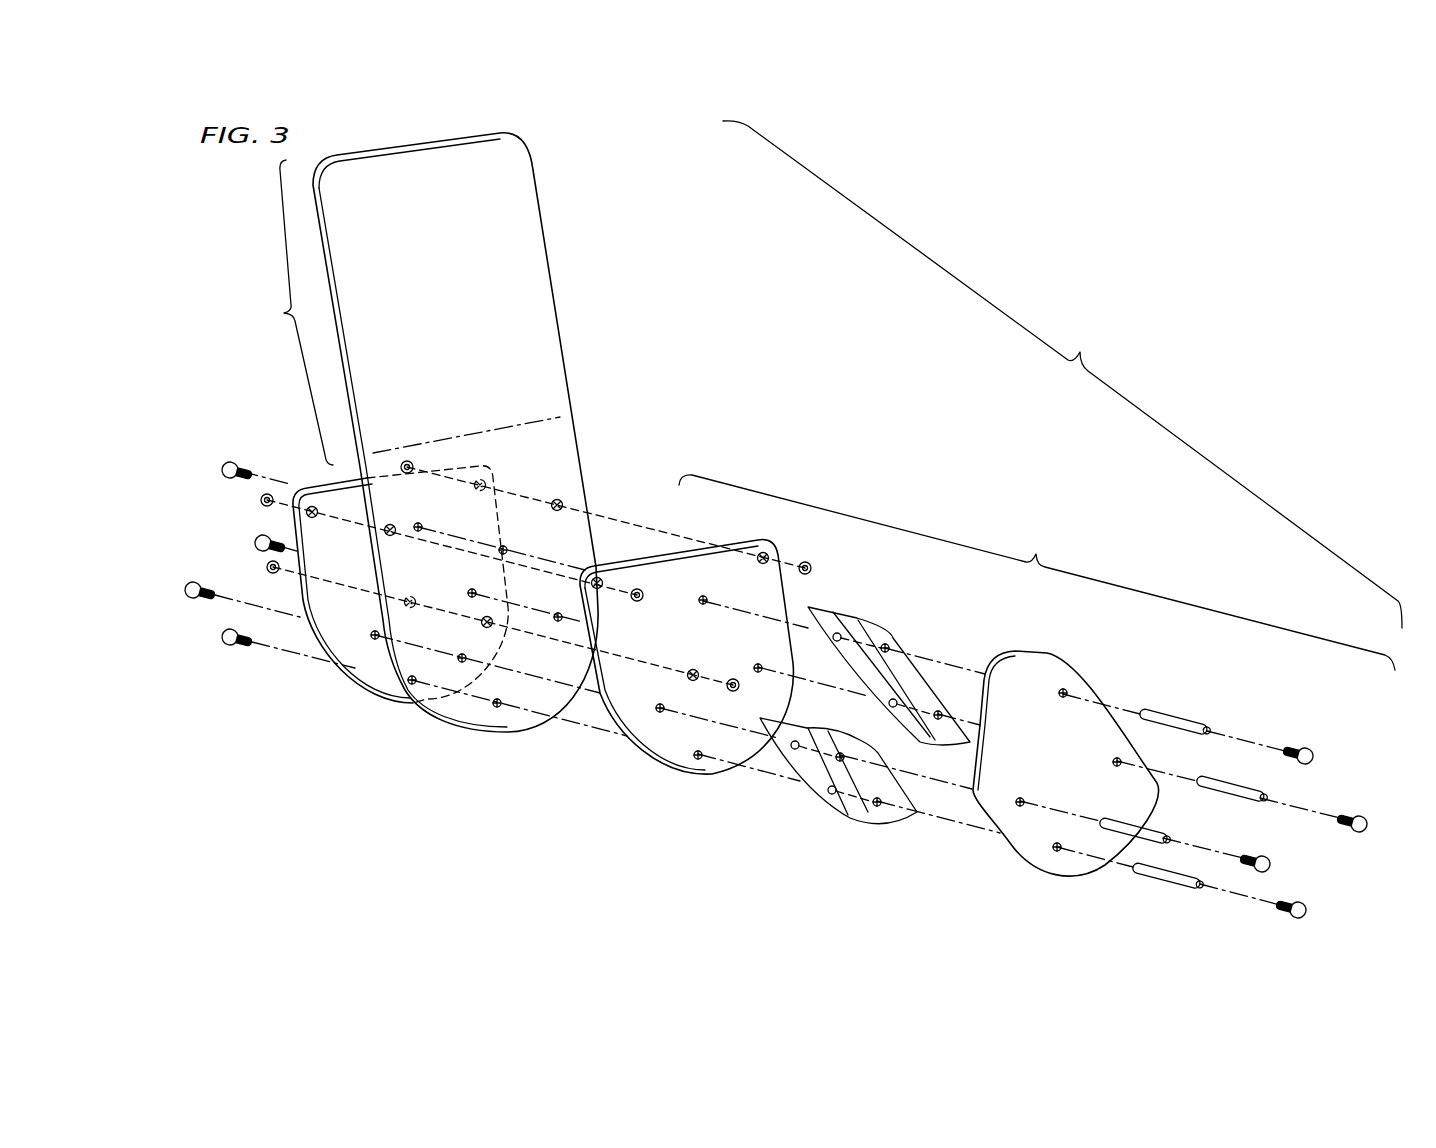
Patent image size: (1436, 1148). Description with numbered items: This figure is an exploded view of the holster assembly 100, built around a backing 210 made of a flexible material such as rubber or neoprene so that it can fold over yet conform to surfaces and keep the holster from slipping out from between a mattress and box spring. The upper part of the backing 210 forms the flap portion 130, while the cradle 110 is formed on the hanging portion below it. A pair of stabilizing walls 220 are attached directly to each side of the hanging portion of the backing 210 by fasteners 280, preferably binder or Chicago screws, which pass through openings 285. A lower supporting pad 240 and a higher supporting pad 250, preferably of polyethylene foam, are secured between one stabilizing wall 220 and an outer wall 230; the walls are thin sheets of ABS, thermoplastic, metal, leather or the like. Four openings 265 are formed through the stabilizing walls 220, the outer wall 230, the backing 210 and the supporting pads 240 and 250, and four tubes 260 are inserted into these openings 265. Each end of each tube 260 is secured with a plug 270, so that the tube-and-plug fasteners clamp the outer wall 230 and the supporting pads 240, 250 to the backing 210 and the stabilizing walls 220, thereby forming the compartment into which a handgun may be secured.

The holster assembly 100 is at (1062, 374).
The cradle 110 is at (1037, 572).
The flap portion 130 is at (290, 312).
The backing 210 is at (525, 228).
The stabilizing walls 220 is at (352, 686).
The outer wall 230 is at (1046, 666).
The lower supporting pad 240 is at (822, 803).
The higher supporting pad 250 is at (862, 619).
The tubes 260 is at (1175, 717).
The openings 265 is at (420, 524).
The plugs 270 is at (240, 462).
The fasteners 280 is at (262, 498).
The openings 285 is at (558, 500).